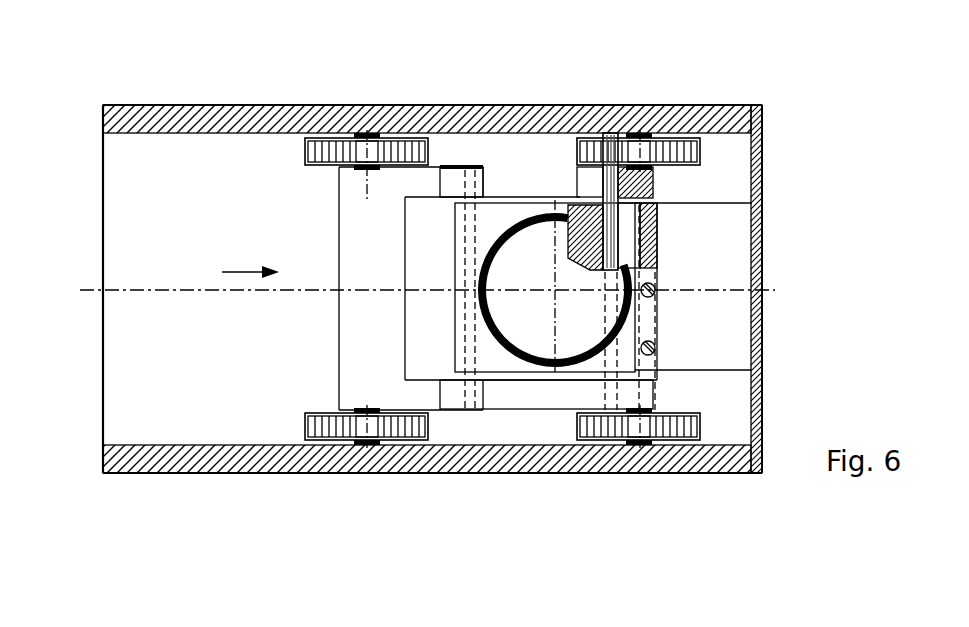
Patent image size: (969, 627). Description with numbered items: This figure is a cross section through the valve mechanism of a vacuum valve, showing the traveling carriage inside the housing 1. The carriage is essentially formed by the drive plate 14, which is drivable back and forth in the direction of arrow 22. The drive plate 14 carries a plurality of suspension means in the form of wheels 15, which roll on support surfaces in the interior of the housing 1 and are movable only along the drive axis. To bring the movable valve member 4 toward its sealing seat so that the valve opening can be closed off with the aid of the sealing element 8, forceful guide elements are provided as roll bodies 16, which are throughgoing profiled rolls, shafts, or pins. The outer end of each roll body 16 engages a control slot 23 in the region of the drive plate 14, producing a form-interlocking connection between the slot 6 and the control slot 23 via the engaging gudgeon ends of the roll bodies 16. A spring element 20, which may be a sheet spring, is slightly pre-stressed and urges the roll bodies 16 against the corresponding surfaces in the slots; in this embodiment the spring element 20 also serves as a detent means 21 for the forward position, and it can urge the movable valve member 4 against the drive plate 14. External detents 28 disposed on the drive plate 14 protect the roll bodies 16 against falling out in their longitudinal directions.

The housing 1 is at (198, 117).
The movable valve member 4 is at (506, 363).
The slot 6 is at (630, 230).
The sealing element 8 is at (562, 388).
The drive plate 14 is at (352, 363).
The wheels 15 is at (340, 152).
The roll bodies 16 is at (473, 185).
The spring element 20 is at (707, 256).
The detent means 21 is at (764, 317).
The arrow 22 is at (240, 272).
The control slot 23 is at (450, 185).
The external detents 28 is at (463, 419).